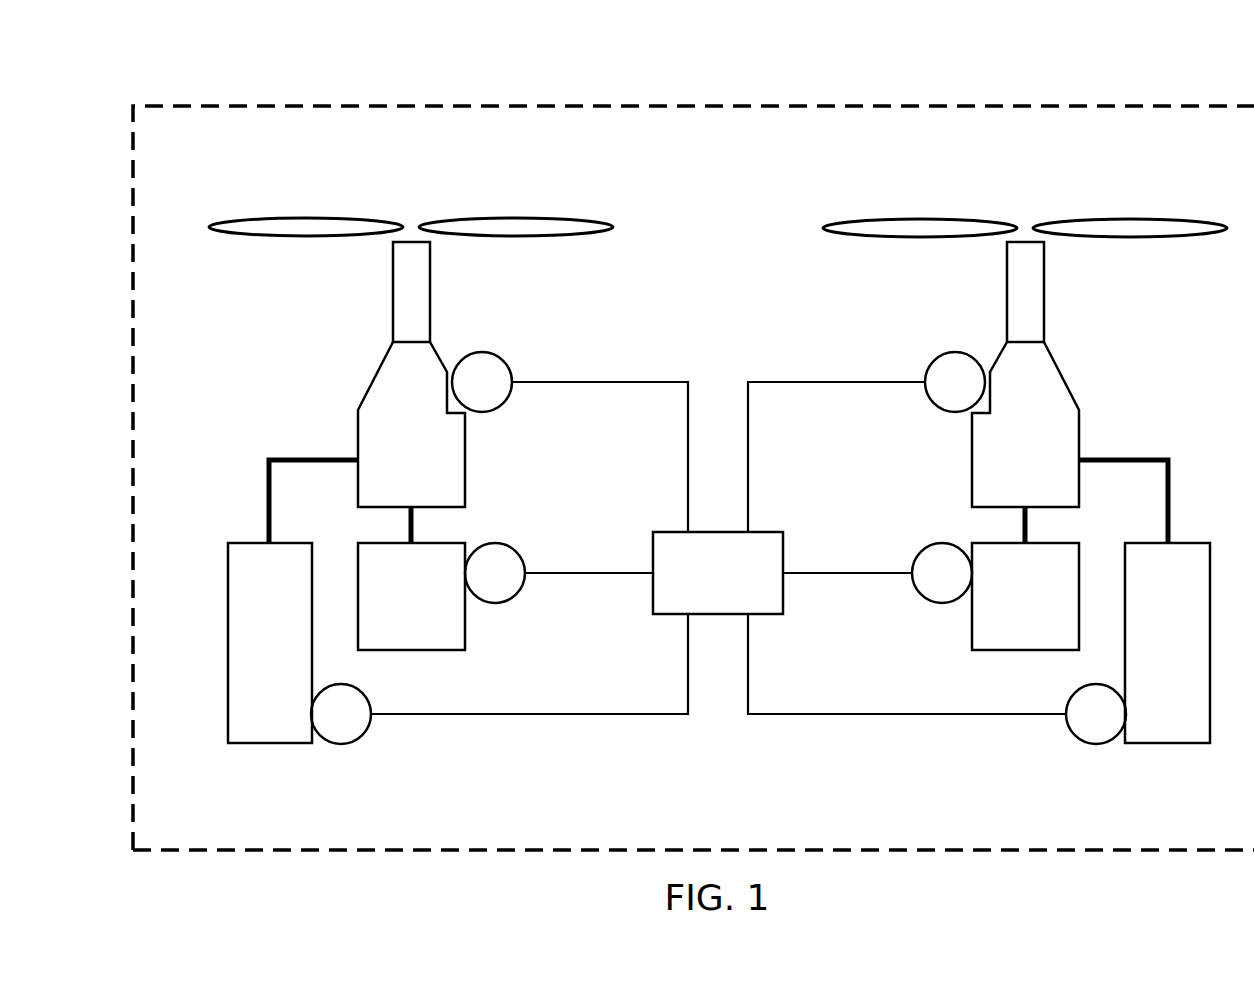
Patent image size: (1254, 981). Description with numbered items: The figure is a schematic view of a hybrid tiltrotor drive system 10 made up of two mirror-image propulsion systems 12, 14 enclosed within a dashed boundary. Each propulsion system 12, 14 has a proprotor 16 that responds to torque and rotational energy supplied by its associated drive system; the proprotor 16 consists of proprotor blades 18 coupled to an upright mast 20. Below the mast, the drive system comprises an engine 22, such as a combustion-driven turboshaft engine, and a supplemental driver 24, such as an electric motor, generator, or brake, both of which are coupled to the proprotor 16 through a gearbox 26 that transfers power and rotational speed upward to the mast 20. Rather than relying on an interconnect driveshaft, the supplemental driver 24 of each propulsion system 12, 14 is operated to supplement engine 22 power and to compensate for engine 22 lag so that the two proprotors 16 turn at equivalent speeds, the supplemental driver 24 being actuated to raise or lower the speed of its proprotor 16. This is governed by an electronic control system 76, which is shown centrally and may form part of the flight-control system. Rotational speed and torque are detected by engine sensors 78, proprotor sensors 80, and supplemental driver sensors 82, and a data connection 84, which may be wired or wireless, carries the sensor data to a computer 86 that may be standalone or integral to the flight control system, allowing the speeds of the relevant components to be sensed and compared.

The hybrid tiltrotor drive system 10 is at (673, 102).
The propulsion system 12 is at (549, 315).
The propulsion system 14 is at (888, 315).
The proprotor 16 is at (301, 332).
The proprotor blades 18 is at (310, 218).
The mast 20 is at (432, 292).
The engine 22 is at (253, 660).
The supplemental driver 24 is at (396, 612).
The gearbox 26 is at (396, 478).
The electronic control system 76 is at (708, 740).
The engine sensor 78 is at (326, 729).
The proprotor sensor 80 is at (467, 397).
The supplemental driver sensor 82 is at (480, 588).
The data connection 84 is at (687, 458).
The computer 86 is at (702, 588).